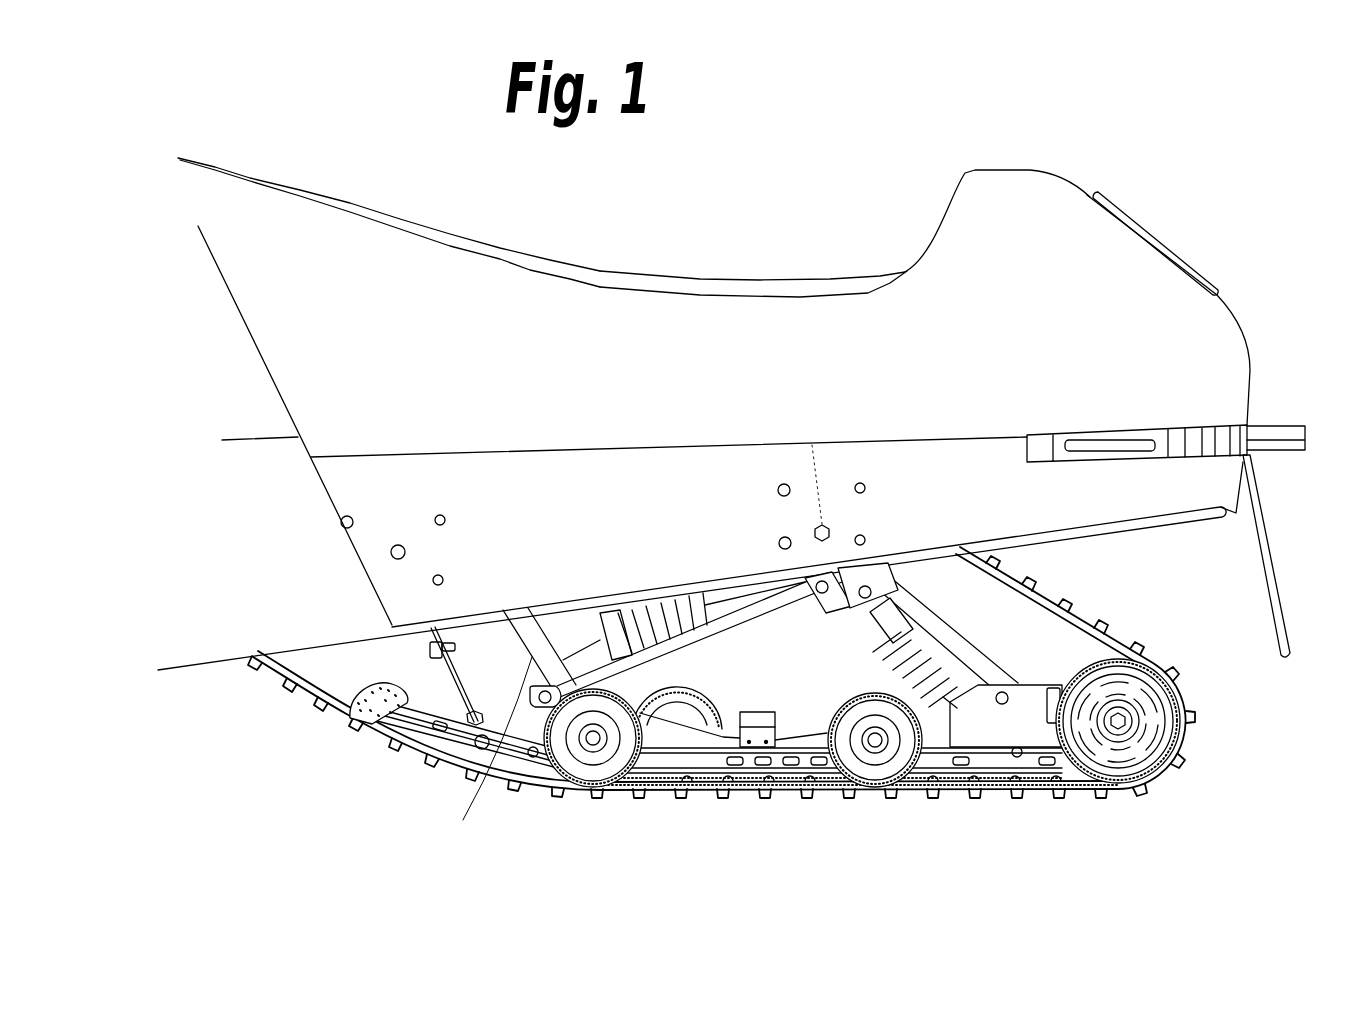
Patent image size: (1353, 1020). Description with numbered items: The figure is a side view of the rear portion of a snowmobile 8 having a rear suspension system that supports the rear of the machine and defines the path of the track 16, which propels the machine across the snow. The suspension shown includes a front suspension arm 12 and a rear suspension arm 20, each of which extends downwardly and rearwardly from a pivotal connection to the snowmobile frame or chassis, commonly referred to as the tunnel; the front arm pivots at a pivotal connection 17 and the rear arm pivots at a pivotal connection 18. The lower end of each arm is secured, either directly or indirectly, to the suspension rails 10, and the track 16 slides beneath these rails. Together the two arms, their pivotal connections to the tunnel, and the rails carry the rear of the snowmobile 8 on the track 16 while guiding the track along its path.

The snowmobile 8 is at (1153, 210).
The suspension rails 10 is at (516, 760).
The front suspension arm 12 is at (490, 762).
The track 16 is at (990, 787).
The pivotal connection 17 is at (390, 552).
The pivotal connection 18 is at (820, 276).
The rear suspension arm 20 is at (980, 658).